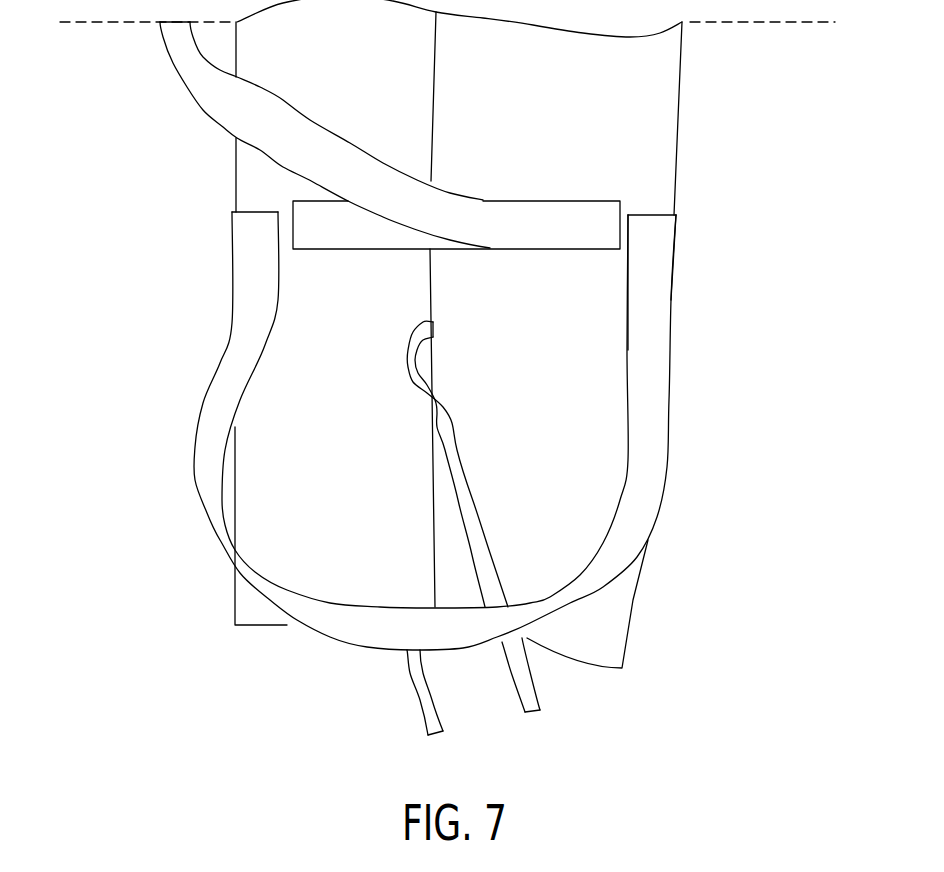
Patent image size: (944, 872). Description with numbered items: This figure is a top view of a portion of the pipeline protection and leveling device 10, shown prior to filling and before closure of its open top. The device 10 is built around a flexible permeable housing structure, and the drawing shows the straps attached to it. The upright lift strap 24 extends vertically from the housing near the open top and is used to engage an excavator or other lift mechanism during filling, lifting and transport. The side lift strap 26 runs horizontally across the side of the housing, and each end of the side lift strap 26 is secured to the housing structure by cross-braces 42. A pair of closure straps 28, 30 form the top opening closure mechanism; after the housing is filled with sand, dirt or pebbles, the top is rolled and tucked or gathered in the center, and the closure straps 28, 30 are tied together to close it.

The pipeline protection and leveling device 10 is at (712, 233).
The upright lift strap 24 is at (657, 442).
The side lift strap 26 is at (197, 80).
The closure strap 28 is at (428, 713).
The closure strap 30 is at (527, 692).
The cross-brace 42 is at (553, 217).